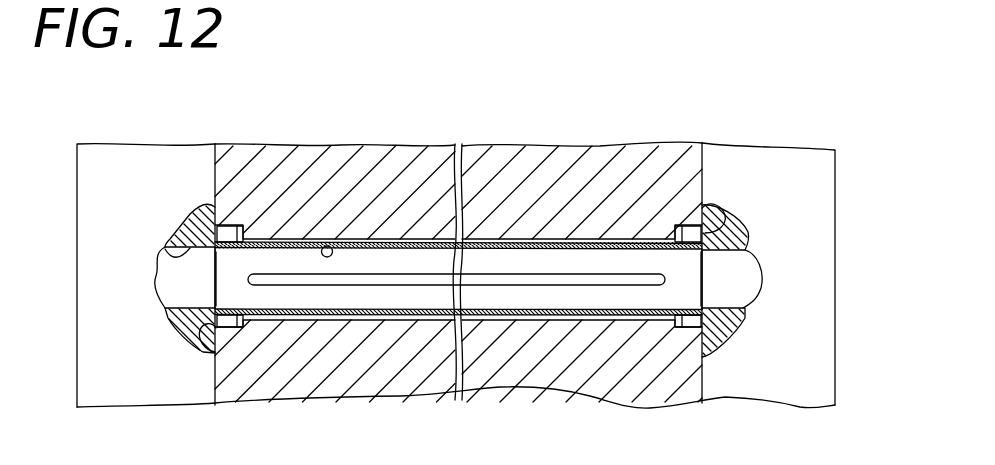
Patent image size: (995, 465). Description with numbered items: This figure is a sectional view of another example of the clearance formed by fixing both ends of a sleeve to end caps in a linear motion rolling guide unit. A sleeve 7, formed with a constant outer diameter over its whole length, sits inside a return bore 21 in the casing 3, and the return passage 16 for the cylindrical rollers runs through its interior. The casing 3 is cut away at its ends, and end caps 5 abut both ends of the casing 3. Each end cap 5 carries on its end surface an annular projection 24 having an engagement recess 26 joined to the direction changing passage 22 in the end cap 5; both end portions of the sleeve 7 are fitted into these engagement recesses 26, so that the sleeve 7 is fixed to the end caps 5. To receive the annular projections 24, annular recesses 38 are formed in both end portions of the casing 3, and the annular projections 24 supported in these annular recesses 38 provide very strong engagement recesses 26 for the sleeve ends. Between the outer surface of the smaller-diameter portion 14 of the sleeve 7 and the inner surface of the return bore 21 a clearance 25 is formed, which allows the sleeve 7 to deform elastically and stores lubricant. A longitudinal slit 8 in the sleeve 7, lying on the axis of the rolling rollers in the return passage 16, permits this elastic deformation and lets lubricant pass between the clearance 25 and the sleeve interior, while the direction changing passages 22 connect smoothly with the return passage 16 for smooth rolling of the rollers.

The casing 3 is at (538, 185).
The end cap 5 is at (145, 182).
The sleeve 7 is at (388, 236).
The slit 8 is at (415, 281).
The smaller-diameter portion 14 is at (580, 237).
The return passage 16 is at (326, 300).
The return bore 21 is at (335, 240).
The direction changing passage 22 is at (162, 252).
The annular projection 24 is at (233, 228).
The clearance 25 is at (494, 238).
The engagement recess 26 is at (170, 310).
The annular recess 38 is at (718, 215).